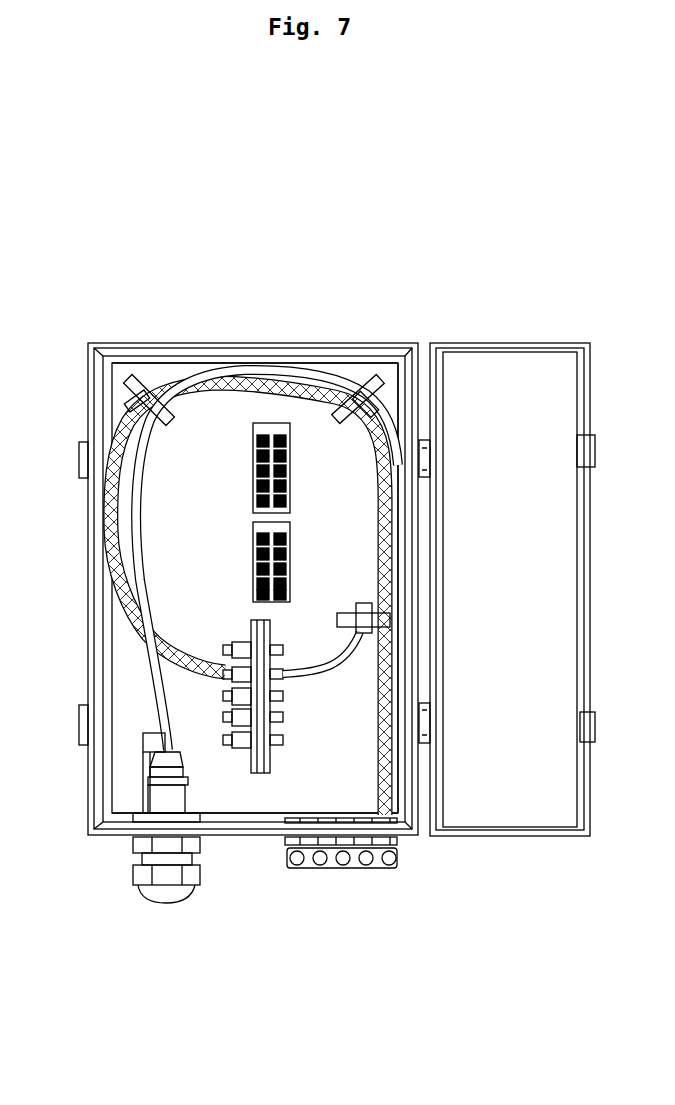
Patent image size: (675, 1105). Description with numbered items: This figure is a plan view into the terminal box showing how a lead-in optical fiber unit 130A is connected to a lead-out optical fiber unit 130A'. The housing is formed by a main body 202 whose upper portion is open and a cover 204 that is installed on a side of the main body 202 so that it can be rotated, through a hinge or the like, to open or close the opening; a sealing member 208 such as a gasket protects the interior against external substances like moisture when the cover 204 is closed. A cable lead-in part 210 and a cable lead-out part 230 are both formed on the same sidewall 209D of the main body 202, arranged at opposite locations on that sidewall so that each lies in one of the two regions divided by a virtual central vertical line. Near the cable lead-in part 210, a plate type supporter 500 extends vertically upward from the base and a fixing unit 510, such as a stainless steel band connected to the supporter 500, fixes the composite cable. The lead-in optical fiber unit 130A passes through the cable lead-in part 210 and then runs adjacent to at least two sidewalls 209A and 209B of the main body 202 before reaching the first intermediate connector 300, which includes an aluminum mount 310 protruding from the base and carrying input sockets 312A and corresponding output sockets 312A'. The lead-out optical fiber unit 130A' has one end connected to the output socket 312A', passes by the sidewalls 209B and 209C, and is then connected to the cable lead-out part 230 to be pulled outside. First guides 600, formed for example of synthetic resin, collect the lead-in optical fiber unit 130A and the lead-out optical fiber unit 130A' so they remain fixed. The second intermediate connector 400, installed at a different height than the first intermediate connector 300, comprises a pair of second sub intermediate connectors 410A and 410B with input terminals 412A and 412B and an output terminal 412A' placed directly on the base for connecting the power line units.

The main body 202 is at (103, 837).
The cover 204 is at (500, 838).
The sealing member 208 is at (97, 356).
The sidewall 209A is at (100, 347).
The sidewall 209B is at (138, 343).
The sidewall 209C is at (430, 347).
The sidewall 209D is at (410, 836).
The cable lead-in part 210 is at (168, 873).
The cable lead-out part 230 is at (318, 852).
The first intermediate connector 300 is at (248, 766).
The mount 310 is at (385, 763).
The input socket 312A is at (272, 758).
The output socket 312A' is at (228, 757).
The second intermediate connector 400 is at (276, 512).
The second sub intermediate connector 410A is at (253, 483).
The second sub intermediate connector 410B is at (253, 583).
The input terminal 412A is at (152, 471).
The output terminal 412A' is at (397, 471).
The input terminal 412B is at (255, 553).
The supporter 500 is at (121, 777).
The fixing unit 510 is at (186, 780).
The first guide 600 is at (140, 392).
The lead-in optical fiber unit 130A is at (215, 560).
The lead-out optical fiber unit 130A' is at (206, 599).